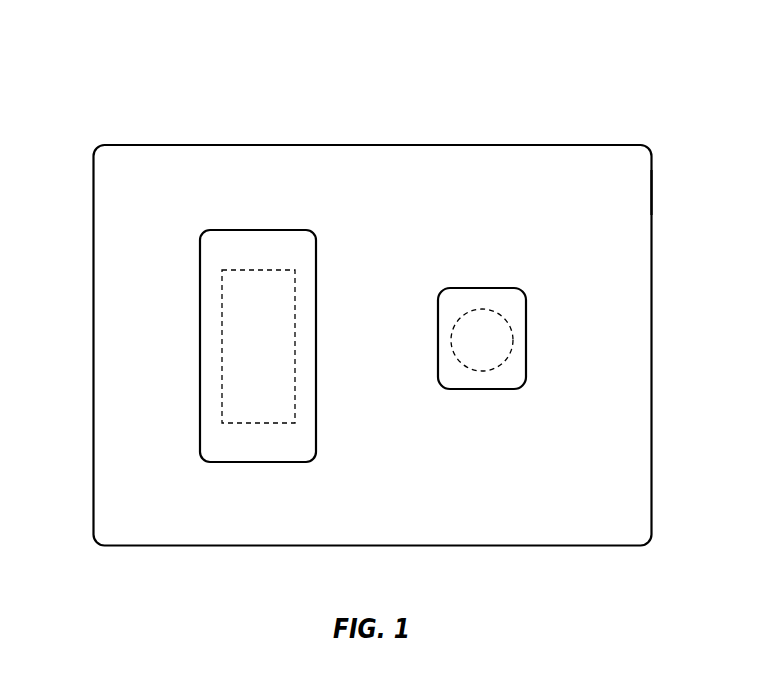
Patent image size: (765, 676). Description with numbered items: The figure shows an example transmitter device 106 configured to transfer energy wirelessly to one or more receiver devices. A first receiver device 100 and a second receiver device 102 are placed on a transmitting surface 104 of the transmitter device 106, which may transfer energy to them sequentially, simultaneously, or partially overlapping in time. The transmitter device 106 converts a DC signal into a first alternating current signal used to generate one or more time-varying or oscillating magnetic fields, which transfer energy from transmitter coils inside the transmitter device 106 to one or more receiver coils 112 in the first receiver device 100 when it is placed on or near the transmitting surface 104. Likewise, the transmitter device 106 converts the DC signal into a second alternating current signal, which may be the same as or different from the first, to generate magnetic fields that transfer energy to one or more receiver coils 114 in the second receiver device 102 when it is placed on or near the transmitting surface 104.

The first receiver device 100 is at (287, 462).
The second receiver device 102 is at (526, 310).
The transmitting surface 104 is at (628, 184).
The transmitter device 106 is at (187, 145).
The receiver coil 112 is at (222, 424).
The receiver coil 114 is at (513, 339).